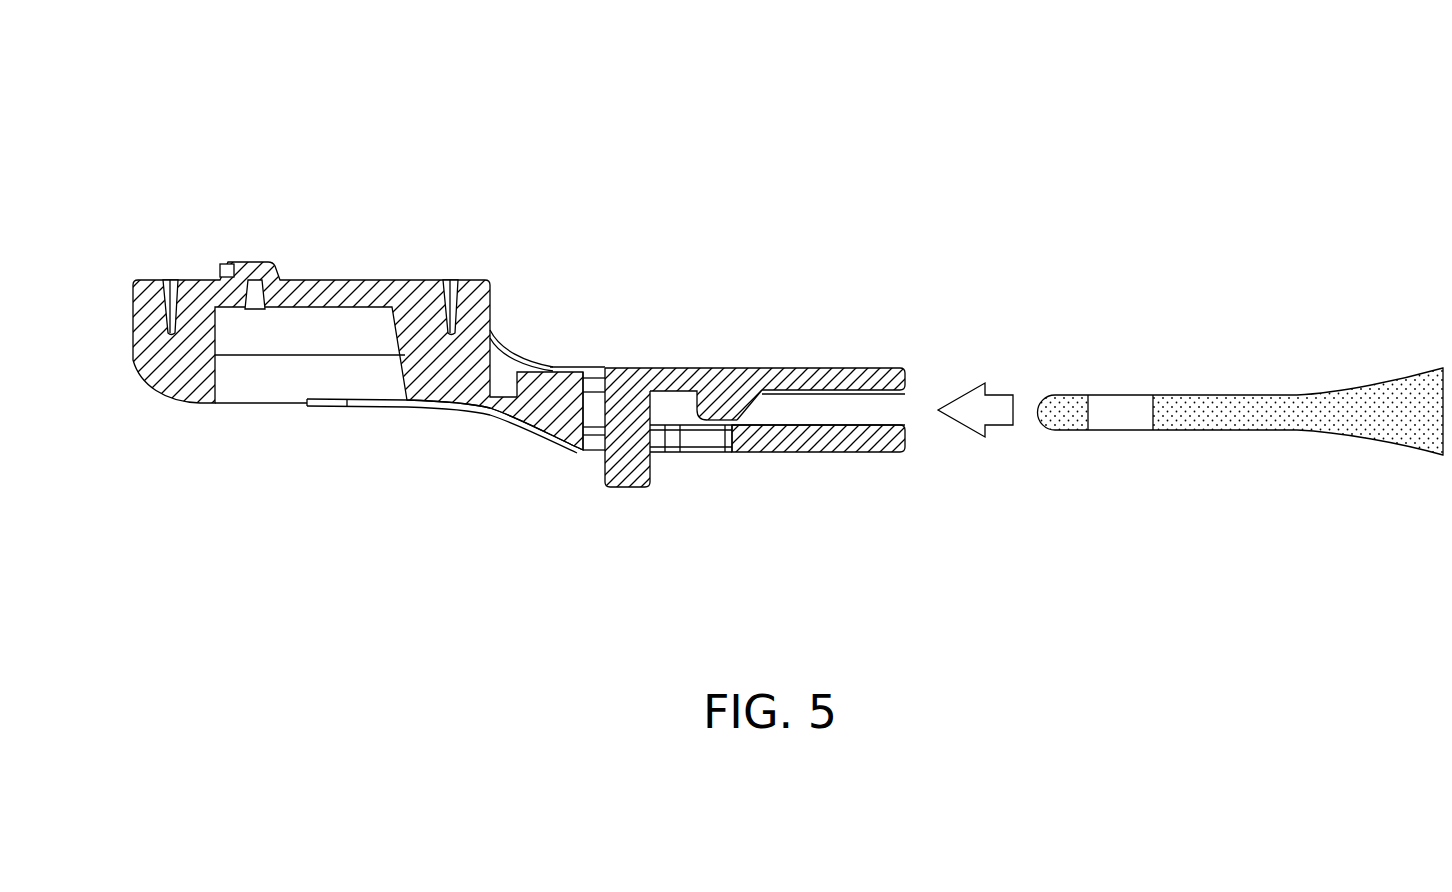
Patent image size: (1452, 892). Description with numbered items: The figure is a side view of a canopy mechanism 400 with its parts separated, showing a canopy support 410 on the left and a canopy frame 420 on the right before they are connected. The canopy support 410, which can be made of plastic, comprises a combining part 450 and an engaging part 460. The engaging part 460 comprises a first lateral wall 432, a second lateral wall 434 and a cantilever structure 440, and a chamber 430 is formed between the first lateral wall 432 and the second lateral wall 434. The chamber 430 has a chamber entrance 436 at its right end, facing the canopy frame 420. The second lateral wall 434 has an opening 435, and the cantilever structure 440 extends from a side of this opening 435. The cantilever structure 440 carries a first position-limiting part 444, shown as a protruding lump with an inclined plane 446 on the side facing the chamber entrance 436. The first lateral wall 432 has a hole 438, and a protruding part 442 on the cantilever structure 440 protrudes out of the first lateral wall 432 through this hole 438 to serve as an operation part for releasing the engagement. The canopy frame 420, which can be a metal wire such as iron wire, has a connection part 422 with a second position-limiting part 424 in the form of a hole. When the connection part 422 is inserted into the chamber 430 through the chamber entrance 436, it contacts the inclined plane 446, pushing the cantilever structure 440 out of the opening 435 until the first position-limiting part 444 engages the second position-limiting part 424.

The canopy mechanism 400 is at (1239, 100).
The canopy support 410 is at (180, 162).
The combining part 450 is at (192, 279).
The engaging part 460 is at (650, 368).
The opening 435 is at (597, 368).
The chamber 430 is at (787, 397).
The second lateral wall 434 is at (870, 368).
The chamber entrance 436 is at (910, 407).
The cantilever structure 440 is at (680, 370).
The protruding part 442 is at (626, 473).
The first position-limiting part 444 is at (730, 405).
The inclined plane 446 is at (757, 392).
The first lateral wall 432 is at (875, 455).
The hole 438 is at (656, 438).
The canopy frame 420 is at (1392, 405).
The connection part 422 is at (1340, 377).
The second position-limiting part 424 is at (1127, 415).